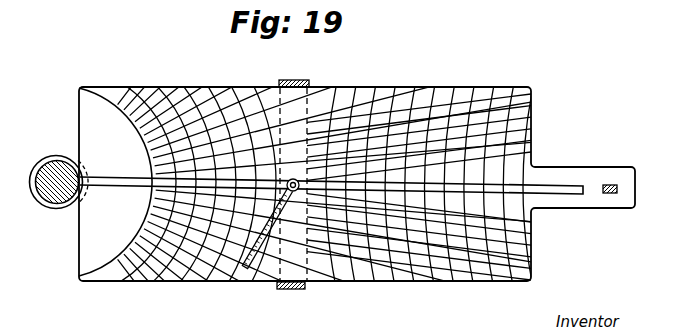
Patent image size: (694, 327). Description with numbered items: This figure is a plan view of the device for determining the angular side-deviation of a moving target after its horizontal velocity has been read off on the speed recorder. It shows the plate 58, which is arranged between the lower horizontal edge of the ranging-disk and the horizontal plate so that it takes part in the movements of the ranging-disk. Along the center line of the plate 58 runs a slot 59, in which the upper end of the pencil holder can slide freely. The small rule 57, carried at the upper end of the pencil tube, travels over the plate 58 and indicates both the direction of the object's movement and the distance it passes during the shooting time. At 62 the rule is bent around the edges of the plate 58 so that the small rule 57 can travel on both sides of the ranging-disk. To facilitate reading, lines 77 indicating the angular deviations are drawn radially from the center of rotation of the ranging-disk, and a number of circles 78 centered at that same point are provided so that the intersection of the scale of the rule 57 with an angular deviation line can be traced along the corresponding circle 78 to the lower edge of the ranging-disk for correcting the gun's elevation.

The small rule 57 is at (259, 252).
The plate 58 is at (438, 282).
The slot 59 is at (533, 188).
The bent portion of the rule 62 is at (296, 290).
The angular deviation lines 77 is at (218, 258).
The circles 78 is at (200, 250).